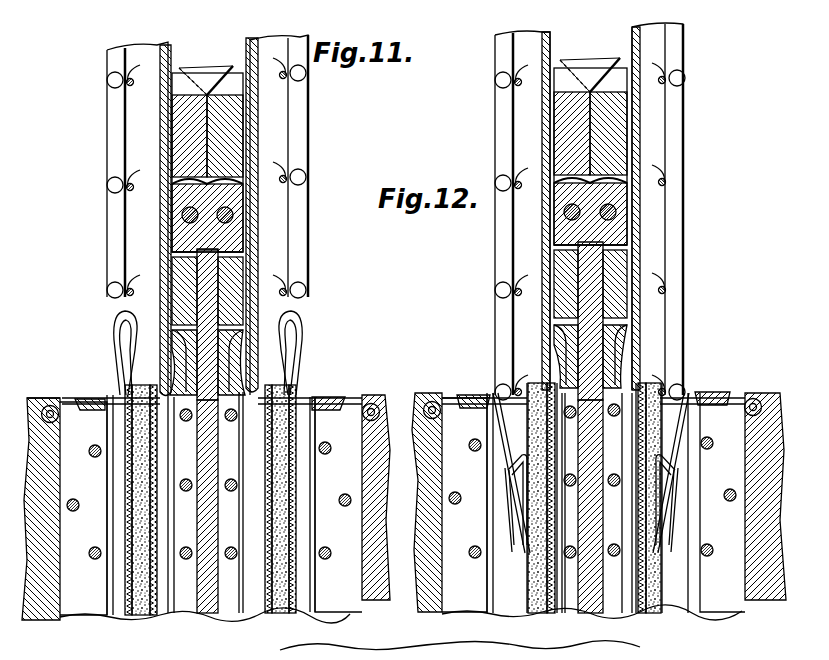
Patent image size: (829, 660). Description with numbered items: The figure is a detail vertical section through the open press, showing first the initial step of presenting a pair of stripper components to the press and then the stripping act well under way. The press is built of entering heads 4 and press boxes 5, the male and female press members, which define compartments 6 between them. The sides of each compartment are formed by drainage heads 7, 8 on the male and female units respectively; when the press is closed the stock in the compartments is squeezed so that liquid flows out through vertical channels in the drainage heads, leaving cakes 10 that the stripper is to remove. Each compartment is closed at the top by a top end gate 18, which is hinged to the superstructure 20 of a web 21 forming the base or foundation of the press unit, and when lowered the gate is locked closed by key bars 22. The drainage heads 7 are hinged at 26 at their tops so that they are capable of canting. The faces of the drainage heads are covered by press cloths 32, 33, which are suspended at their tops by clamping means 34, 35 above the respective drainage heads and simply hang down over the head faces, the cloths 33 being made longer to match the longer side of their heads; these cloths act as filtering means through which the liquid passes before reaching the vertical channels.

In FIG. 11, the entering heads 4 is at (38, 396).
In FIG. 11, the press boxes 5 is at (266, 362).
In FIG. 11, the compartments 6 is at (304, 418).
In FIG. 11, the drainage heads 7 is at (86, 618).
In FIG. 12, the drainage heads 7 is at (468, 604).
In FIG. 11, the drainage heads 8 is at (186, 613).
In FIG. 12, the drainage heads 8 is at (573, 607).
In FIG. 11, the cakes 10 is at (283, 386).
In FIG. 12, the cakes 10 is at (661, 383).
In FIG. 11, the top end gates 18 is at (207, 290).
In FIG. 12, the top end gates 18 is at (620, 307).
In FIG. 11, the superstructure 20 is at (237, 267).
In FIG. 12, the superstructure 20 is at (605, 613).
In FIG. 11, the web 21 is at (208, 613).
In FIG. 11, the key bars 22 is at (228, 140).
In FIG. 11, the hinge 26 is at (52, 405).
In FIG. 12, the hinge 26 is at (760, 405).
In FIG. 11, the press cloths 32 is at (128, 470).
In FIG. 12, the press cloths 32 is at (498, 448).
In FIG. 11, the press cloths 33 is at (142, 517).
In FIG. 12, the press cloths 33 is at (528, 583).
In FIG. 11, the clamping means 34 is at (345, 374).
In FIG. 12, the clamping means 34 is at (470, 393).
In FIG. 11, the clamping means 35 is at (180, 352).
In FIG. 12, the clamping means 35 is at (623, 338).